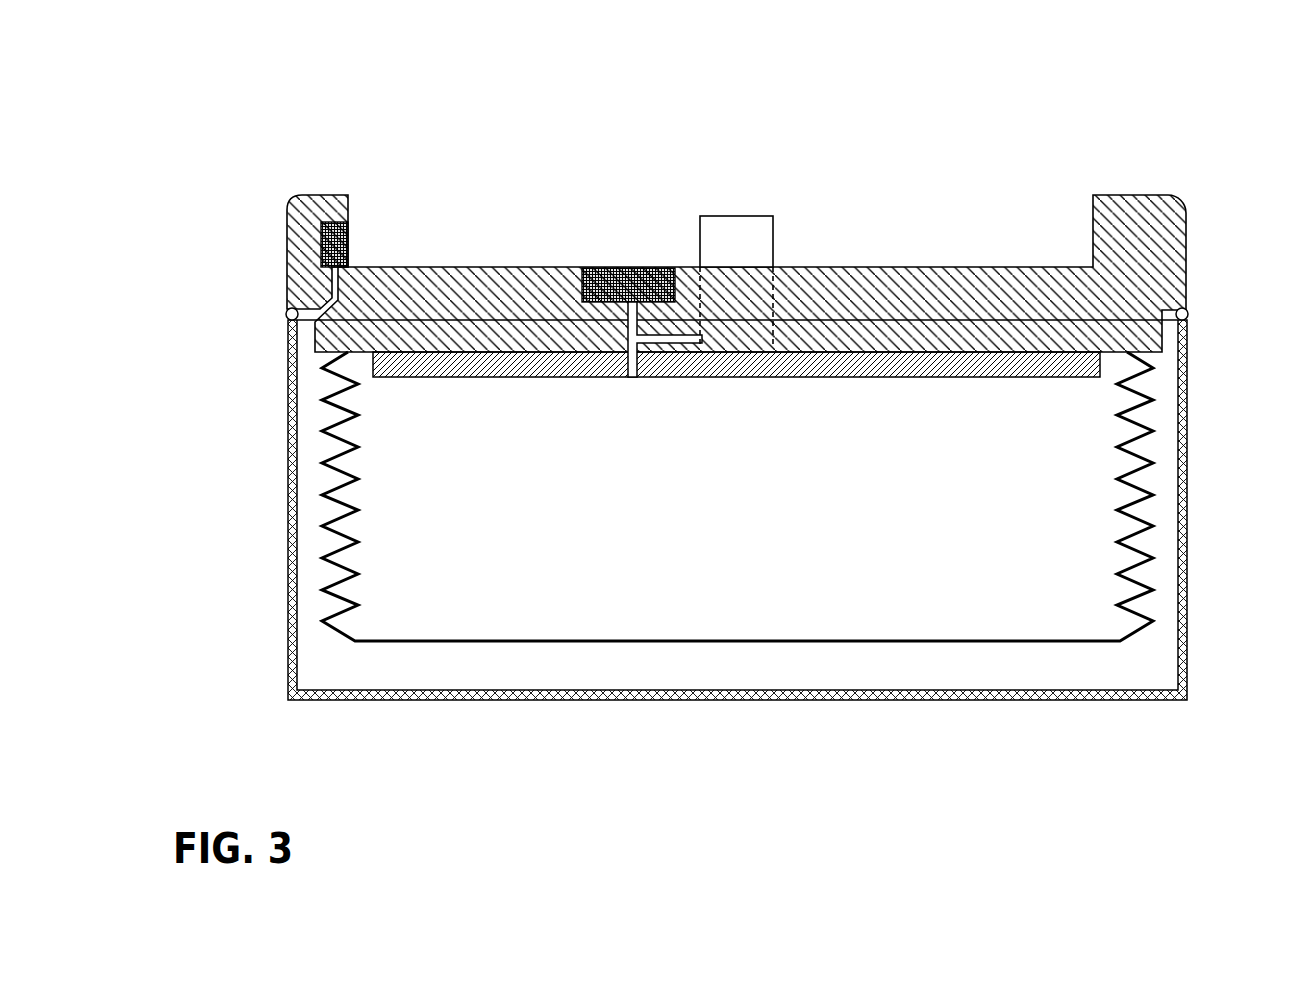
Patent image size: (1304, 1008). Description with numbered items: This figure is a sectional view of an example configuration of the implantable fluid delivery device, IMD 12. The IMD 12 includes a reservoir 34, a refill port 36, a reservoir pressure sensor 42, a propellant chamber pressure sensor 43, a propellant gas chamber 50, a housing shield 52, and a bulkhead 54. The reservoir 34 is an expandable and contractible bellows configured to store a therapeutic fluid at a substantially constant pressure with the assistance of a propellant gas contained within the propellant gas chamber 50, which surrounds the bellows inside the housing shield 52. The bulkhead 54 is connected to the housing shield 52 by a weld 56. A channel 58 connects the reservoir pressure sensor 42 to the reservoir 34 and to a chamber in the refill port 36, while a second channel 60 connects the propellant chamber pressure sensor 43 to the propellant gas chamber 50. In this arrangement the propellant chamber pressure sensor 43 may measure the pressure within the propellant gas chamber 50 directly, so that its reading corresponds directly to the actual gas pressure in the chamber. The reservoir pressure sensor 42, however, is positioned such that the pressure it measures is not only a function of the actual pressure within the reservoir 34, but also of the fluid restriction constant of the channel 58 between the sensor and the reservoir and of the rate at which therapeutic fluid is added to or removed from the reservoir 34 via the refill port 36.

The IMD 12 is at (720, 356).
The reservoir 34 is at (744, 514).
The refill port 36 is at (753, 216).
The reservoir pressure sensor 42 is at (627, 267).
The propellant chamber pressure sensor 43 is at (348, 243).
The propellant gas chamber 50 is at (750, 676).
The housing shield 52 is at (287, 477).
The bulkhead 54 is at (1123, 195).
The weld 56 is at (288, 308).
The channel 58 is at (638, 357).
The channel 60 is at (327, 297).